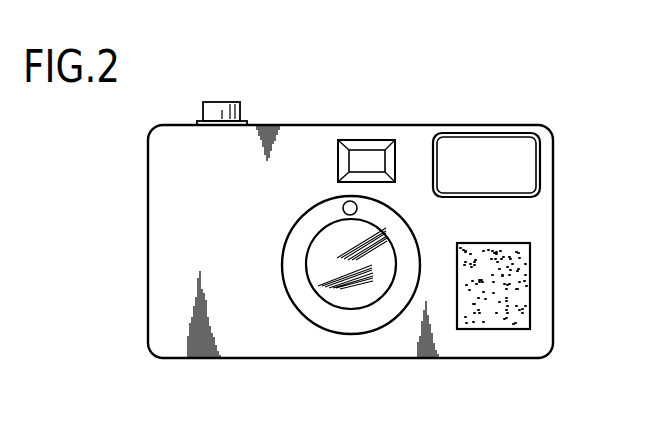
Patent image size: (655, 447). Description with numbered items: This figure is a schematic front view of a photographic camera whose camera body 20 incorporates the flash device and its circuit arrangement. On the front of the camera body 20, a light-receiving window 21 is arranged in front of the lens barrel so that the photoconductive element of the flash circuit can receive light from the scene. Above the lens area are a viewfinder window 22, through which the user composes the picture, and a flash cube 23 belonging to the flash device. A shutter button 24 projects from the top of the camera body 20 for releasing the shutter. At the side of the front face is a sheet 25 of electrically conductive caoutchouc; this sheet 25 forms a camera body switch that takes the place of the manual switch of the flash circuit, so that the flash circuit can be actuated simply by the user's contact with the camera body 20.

The camera body 20 is at (192, 233).
The light-receiving window 21 is at (343, 208).
The viewfinder window 22 is at (367, 157).
The flash cube 23 is at (492, 157).
The shutter button 24 is at (222, 108).
The sheet of electrically conductive caoutchouc 25 is at (525, 293).